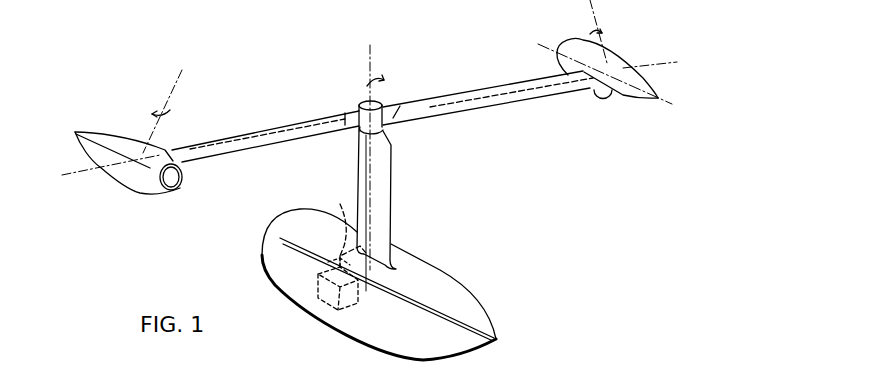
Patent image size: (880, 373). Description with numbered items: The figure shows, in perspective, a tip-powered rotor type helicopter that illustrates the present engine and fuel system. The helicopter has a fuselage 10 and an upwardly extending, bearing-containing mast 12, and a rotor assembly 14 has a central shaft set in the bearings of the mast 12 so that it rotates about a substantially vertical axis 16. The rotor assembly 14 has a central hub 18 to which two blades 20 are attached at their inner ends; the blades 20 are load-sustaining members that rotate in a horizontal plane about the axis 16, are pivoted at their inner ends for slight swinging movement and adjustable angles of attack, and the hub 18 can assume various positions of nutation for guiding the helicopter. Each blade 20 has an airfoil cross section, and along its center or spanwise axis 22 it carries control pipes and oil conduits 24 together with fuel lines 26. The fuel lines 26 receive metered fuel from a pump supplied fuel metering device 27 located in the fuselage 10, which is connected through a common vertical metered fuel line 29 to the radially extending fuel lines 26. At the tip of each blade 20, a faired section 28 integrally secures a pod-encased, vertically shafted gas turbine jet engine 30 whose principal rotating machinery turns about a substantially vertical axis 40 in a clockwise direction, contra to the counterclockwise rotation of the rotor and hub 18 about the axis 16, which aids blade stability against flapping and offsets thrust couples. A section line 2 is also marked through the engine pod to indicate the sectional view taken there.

The section line 2- 2 is at (542, 43).
The fuselage 10 is at (435, 268).
The mast 12 is at (384, 183).
The rotor assembly 14 is at (357, 94).
The vertical axis 16 is at (373, 72).
The central hub 18 is at (384, 128).
The blades 20 is at (225, 131).
The spanwise axis 22 is at (71, 176).
The control pipes and oil conduits 24 is at (283, 118).
The fuel pipes or lines 26 is at (262, 137).
The fuel metering device 27 is at (317, 303).
The faired section 28 is at (618, 84).
The vertical metered fuel line 29 is at (341, 213).
The gas turbine jet engine 30 is at (141, 190).
The vertical axis 40 is at (172, 93).